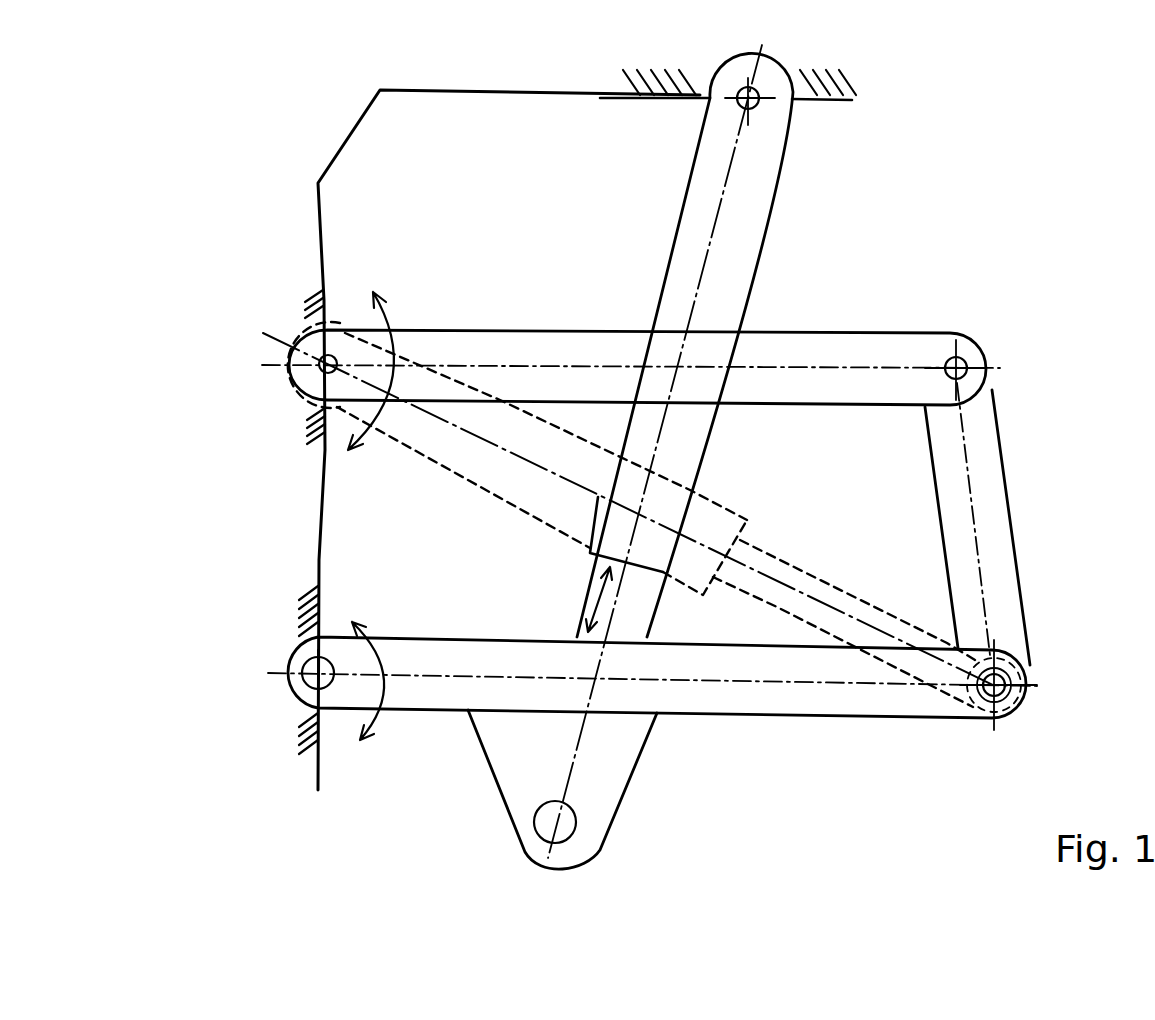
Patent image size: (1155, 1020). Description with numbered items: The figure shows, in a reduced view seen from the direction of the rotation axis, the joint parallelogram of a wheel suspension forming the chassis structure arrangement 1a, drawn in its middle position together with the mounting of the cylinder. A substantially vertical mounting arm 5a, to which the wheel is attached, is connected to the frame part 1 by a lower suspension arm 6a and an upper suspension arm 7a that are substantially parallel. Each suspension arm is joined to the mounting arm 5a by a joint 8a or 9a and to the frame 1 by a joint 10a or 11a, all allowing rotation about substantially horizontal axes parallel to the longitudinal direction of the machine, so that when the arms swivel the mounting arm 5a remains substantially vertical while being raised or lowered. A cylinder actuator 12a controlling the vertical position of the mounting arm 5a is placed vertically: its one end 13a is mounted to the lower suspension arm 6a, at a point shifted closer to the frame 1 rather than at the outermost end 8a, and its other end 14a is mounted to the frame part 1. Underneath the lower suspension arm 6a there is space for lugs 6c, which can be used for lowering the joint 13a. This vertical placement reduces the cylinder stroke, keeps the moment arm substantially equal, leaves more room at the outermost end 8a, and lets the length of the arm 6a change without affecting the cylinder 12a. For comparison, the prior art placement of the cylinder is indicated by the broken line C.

The frame part 1 is at (320, 504).
The chassis structure arrangement 1a is at (891, 216).
The mounting arm 5a is at (1010, 610).
The lower suspension arm 6a is at (848, 700).
The lugs 6c is at (612, 753).
The upper suspension arm 7a is at (860, 352).
The joint 8a is at (1011, 712).
The joint 9a is at (962, 358).
The joint 10a is at (307, 685).
The joint 11a is at (302, 380).
The cylinder actuator 12a is at (750, 176).
The one end of the cylinder 13a is at (572, 833).
The other end of the cylinder 14a is at (740, 99).
The broken line C is at (803, 618).